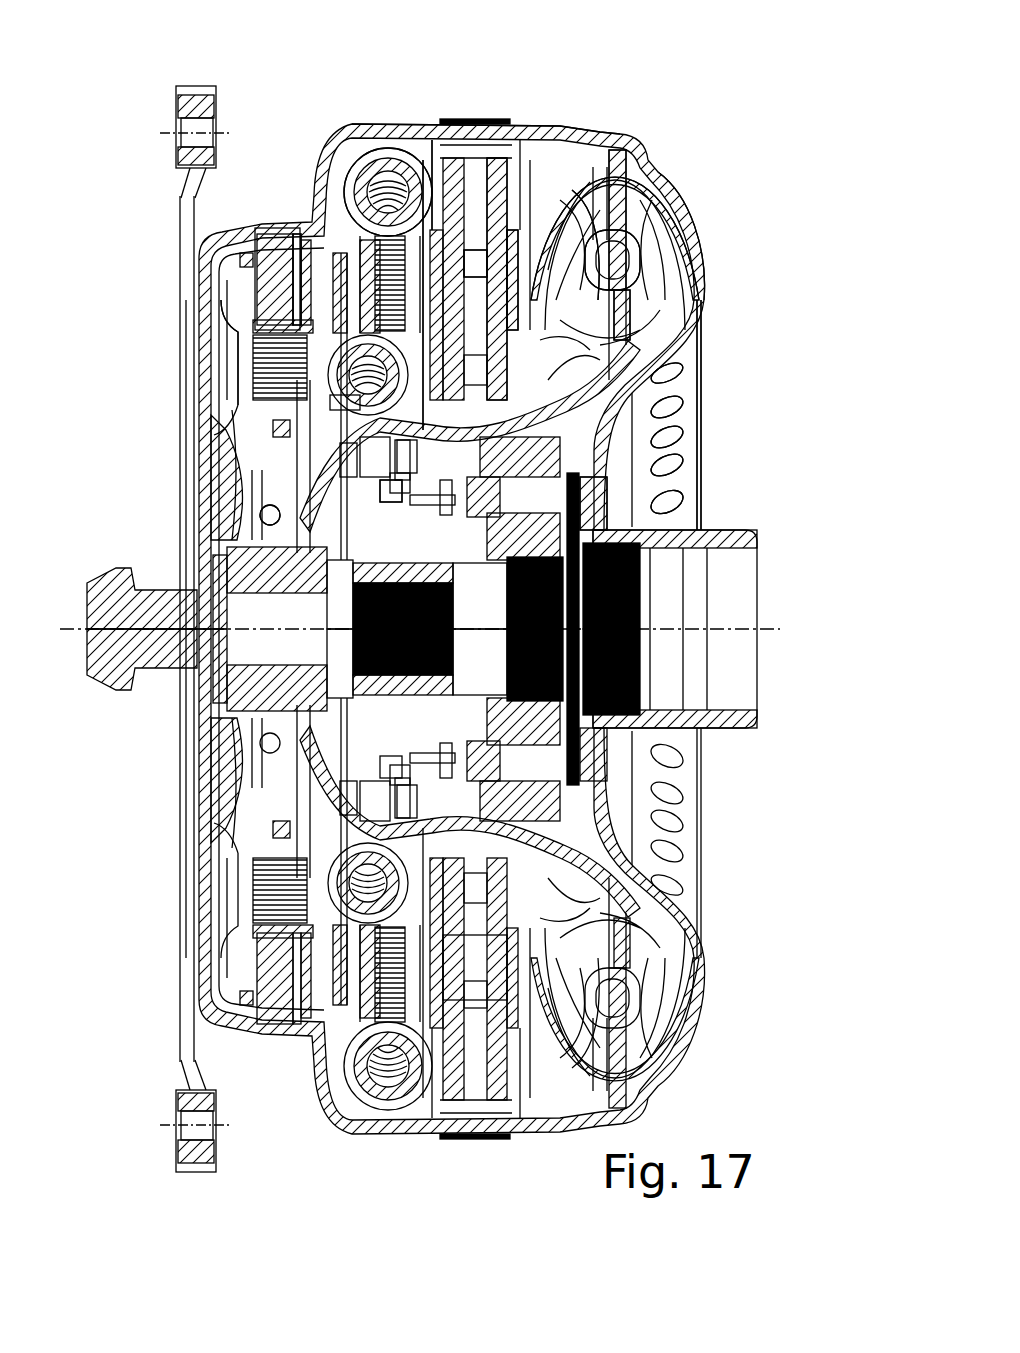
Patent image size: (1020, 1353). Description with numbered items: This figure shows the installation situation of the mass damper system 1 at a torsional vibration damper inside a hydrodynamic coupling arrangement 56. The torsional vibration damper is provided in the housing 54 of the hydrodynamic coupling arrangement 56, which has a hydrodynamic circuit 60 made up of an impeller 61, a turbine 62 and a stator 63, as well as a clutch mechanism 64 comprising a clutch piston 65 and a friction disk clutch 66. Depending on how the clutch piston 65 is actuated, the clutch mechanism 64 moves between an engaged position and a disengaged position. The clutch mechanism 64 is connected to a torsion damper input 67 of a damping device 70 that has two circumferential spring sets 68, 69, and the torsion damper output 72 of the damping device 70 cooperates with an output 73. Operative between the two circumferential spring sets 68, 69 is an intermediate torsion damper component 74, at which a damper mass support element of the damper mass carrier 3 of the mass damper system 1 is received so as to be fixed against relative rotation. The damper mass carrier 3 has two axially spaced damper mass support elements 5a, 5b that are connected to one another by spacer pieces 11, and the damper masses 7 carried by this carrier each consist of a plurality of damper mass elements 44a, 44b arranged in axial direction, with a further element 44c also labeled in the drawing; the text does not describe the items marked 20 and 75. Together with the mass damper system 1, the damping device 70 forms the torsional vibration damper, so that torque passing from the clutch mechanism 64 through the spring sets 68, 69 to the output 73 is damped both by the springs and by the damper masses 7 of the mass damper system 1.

The mass damper system 1 is at (480, 232).
The damper mass carrier 3 is at (587, 293).
The damper mass support element 5a is at (582, 478).
The damper mass support element 5b is at (565, 380).
The damper mass 7 is at (665, 248).
The spacer piece 11 is at (475, 260).
The clutch pack 20 is at (472, 966).
The damper mass element 44a is at (610, 385).
The damper mass element 44b is at (680, 427).
The roller 44c is at (668, 398).
The housing 54 is at (690, 308).
The hydrodynamic coupling arrangement 56 is at (686, 364).
The hydrodynamic circuit 60 is at (575, 220).
The impeller 61 is at (593, 273).
The turbine 62 is at (613, 207).
The stator 63 is at (625, 332).
The clutch mechanism 64 is at (258, 222).
The clutch piston 65 is at (228, 325).
The friction disk clutch 66 is at (283, 238).
The torsion damper input 67 is at (346, 250).
The circumferential spring set 68 is at (430, 160).
The circumferential spring set 69 is at (343, 402).
The damping device 70 is at (426, 258).
The torsion damper output 72 is at (392, 494).
The output 73 is at (370, 553).
The intermediate torsion damper component 74 is at (514, 180).
The pressure plate 75 is at (476, 267).